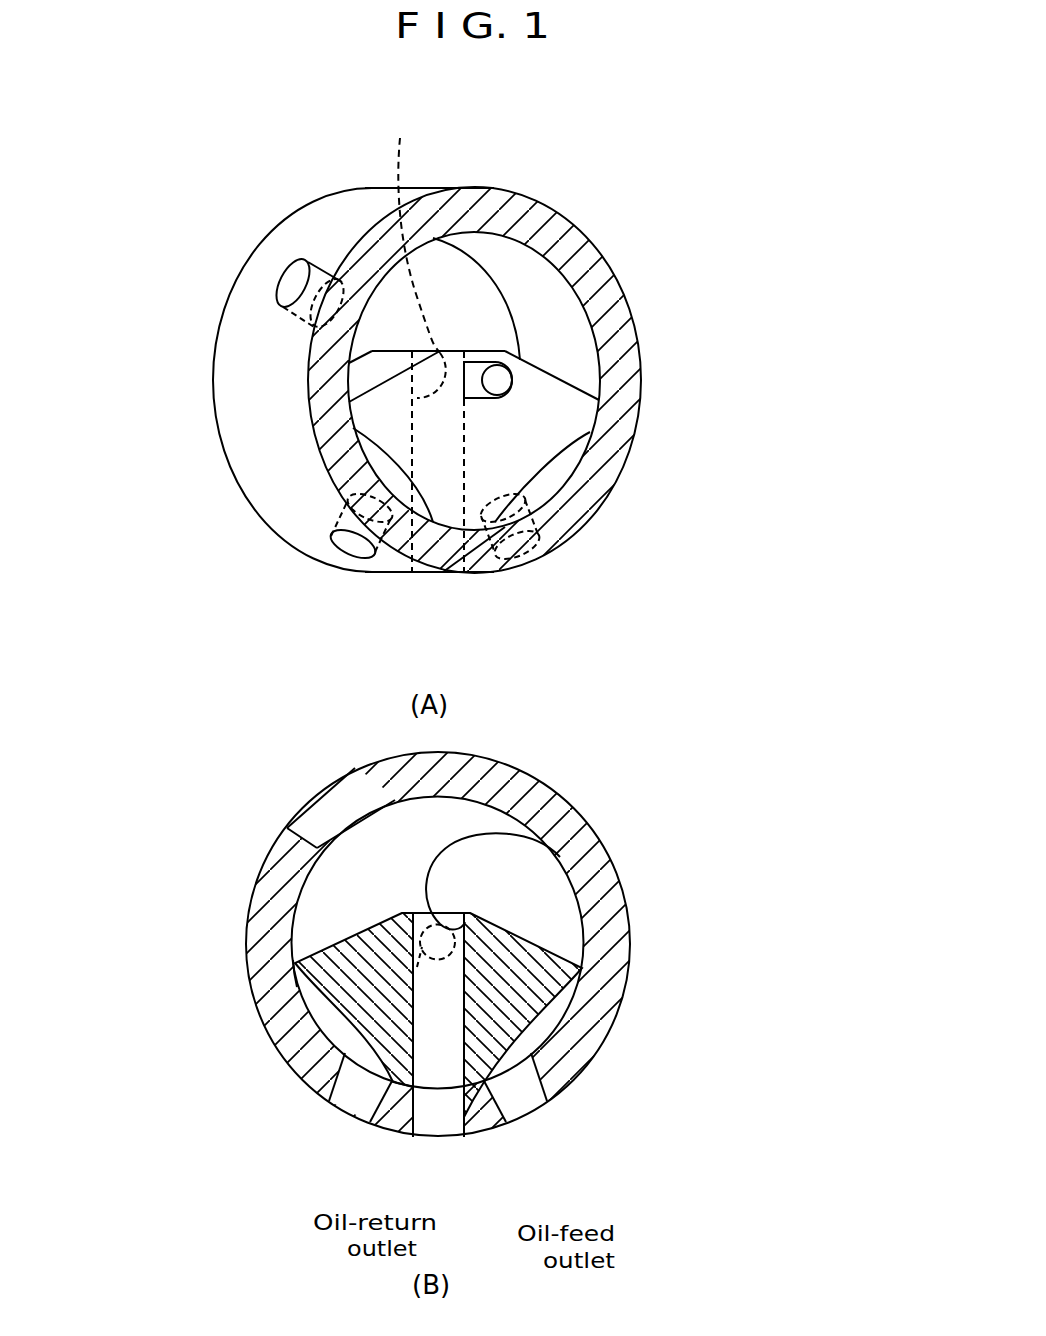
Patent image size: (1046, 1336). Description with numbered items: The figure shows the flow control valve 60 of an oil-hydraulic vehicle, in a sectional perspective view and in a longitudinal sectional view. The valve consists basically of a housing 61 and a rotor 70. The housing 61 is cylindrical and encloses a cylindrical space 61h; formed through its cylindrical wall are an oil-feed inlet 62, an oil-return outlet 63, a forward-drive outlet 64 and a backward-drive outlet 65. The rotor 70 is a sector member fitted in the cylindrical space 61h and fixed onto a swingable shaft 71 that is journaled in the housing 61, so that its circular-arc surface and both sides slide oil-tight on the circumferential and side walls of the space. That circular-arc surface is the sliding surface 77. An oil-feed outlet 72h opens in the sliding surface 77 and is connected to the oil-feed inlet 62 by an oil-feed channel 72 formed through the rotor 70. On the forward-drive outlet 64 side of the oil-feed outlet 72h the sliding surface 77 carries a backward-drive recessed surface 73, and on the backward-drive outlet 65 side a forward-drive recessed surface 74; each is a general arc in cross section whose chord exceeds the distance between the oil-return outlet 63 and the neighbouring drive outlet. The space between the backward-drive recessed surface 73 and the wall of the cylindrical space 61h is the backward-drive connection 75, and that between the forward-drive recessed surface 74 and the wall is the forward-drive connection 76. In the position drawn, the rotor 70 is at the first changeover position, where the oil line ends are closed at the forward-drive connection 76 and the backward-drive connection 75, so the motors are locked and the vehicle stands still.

The flow control valve 60 is at (253, 232).
The housing 61 is at (593, 268).
The cylindrical space 61h is at (456, 817).
The oil-feed inlet 62 is at (287, 276).
The oil-return outlet 63 is at (443, 577).
The forward-drive outlet 64 is at (300, 1163).
The backward-drive outlet 65 is at (533, 563).
The rotor 70 is at (558, 413).
The swingable shaft 71 is at (497, 377).
The oil-feed channel 72 is at (706, 846).
The oil-feed outlet 72h is at (465, 1135).
The backward-drive recessed surface 73 is at (385, 468).
The forward-drive recessed surface 74 is at (553, 1033).
The backward-drive connection 75 is at (362, 1050).
The forward-drive connection 76 is at (522, 1047).
The sliding surface 77 is at (297, 987).